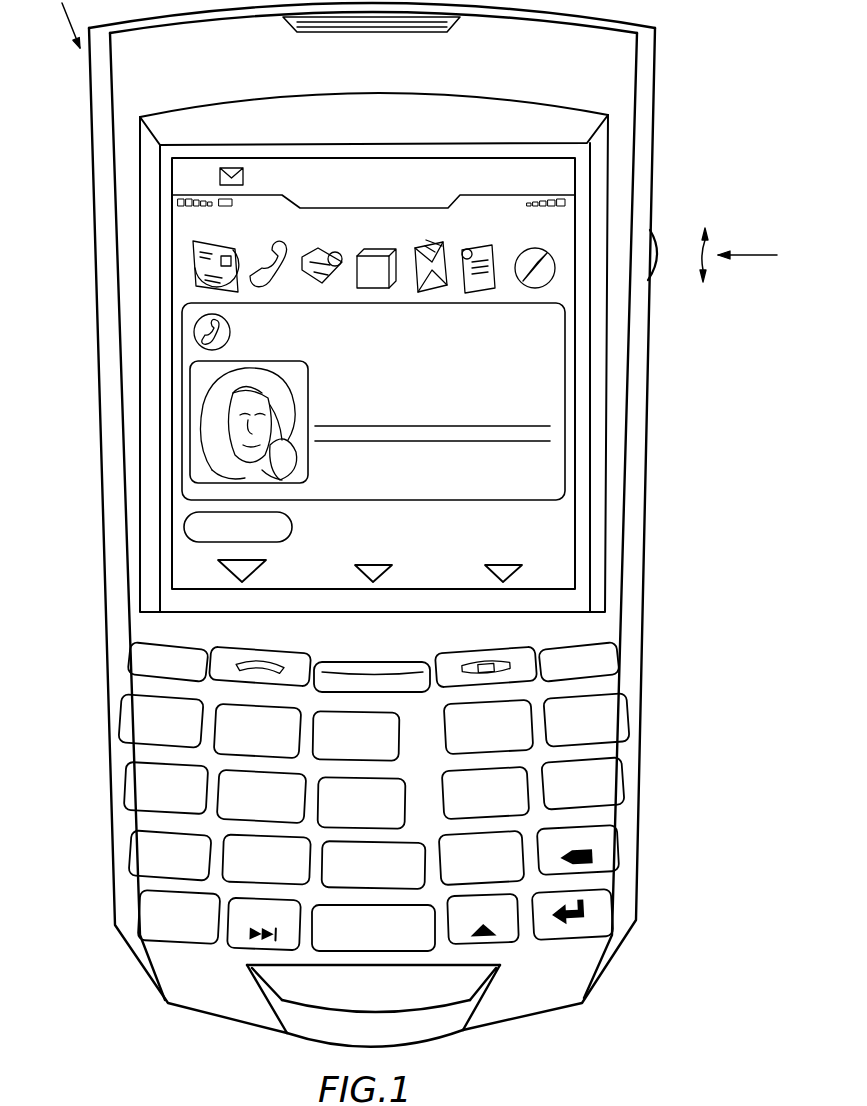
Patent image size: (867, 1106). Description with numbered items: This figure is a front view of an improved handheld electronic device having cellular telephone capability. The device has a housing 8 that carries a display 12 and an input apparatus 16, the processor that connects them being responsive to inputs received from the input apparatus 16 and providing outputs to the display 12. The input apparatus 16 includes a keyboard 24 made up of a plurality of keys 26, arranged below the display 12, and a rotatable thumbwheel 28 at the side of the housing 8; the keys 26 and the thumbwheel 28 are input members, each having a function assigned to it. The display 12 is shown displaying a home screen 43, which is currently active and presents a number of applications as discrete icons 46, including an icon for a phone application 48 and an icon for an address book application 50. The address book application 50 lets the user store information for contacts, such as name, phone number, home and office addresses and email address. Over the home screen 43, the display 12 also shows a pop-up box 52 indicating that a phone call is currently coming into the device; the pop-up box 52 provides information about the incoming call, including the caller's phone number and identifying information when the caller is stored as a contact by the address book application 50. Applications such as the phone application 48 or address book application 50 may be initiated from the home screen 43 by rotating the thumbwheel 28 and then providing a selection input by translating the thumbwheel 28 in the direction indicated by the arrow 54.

The housing 8 is at (637, 312).
The display 12 is at (535, 168).
The input apparatus 16 is at (402, 654).
The keyboard 24 is at (385, 809).
The keys 26 is at (252, 652).
The rotatable thumbwheel 28 is at (660, 232).
The home screen 43 is at (563, 220).
The icons 46 is at (272, 246).
The phone application 48 is at (270, 282).
The address book application 50 is at (348, 272).
The pop-up box 52 is at (563, 382).
The arrow 54 is at (752, 254).